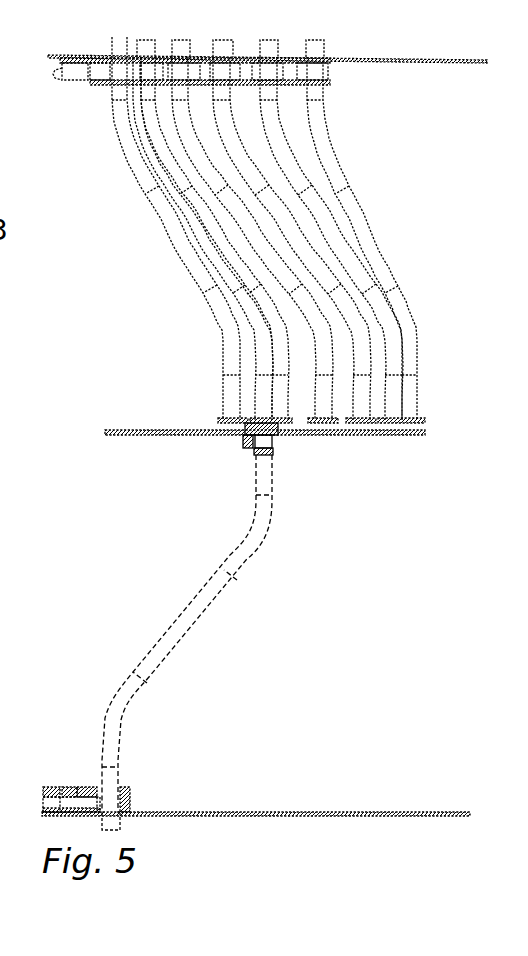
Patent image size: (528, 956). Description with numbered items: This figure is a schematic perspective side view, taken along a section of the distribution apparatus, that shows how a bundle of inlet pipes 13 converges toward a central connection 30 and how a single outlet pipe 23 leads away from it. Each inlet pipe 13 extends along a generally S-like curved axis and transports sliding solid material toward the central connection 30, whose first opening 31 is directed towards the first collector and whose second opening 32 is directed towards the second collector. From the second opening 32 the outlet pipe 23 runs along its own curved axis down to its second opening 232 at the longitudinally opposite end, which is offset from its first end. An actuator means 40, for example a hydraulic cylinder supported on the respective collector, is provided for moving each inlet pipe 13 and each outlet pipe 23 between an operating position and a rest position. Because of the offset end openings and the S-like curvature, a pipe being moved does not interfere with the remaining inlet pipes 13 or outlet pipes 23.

The inlet pipe 13 is at (361, 230).
The actuator means 40 is at (69, 82).
The first opening 31 is at (277, 428).
The central connection 30 is at (277, 447).
The second opening 32 is at (272, 455).
The outlet pipe 23 is at (208, 617).
The second opening 232 is at (120, 823).